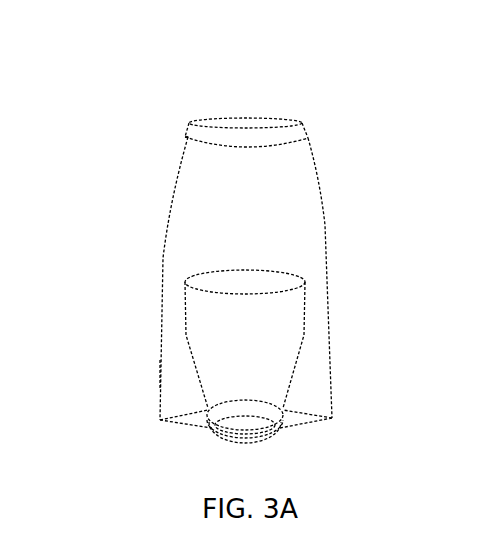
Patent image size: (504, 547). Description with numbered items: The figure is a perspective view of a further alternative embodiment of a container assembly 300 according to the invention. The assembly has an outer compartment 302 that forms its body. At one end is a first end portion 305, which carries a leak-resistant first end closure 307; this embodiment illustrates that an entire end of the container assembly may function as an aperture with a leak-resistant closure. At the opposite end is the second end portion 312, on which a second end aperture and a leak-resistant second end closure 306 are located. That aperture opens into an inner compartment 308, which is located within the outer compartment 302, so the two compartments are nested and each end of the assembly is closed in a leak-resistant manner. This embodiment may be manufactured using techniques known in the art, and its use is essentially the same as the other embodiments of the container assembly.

The beverage container assembly 300 is at (246, 239).
The outer compartment 302 is at (325, 223).
The first end portion 305 is at (150, 147).
The second end closure 306 is at (272, 437).
The cap 307 is at (254, 123).
The inner compartment 308 is at (304, 333).
The second end portion 312 is at (138, 374).